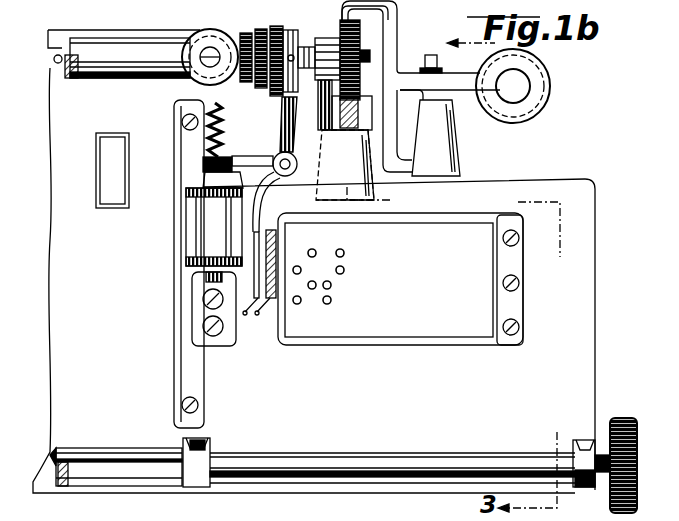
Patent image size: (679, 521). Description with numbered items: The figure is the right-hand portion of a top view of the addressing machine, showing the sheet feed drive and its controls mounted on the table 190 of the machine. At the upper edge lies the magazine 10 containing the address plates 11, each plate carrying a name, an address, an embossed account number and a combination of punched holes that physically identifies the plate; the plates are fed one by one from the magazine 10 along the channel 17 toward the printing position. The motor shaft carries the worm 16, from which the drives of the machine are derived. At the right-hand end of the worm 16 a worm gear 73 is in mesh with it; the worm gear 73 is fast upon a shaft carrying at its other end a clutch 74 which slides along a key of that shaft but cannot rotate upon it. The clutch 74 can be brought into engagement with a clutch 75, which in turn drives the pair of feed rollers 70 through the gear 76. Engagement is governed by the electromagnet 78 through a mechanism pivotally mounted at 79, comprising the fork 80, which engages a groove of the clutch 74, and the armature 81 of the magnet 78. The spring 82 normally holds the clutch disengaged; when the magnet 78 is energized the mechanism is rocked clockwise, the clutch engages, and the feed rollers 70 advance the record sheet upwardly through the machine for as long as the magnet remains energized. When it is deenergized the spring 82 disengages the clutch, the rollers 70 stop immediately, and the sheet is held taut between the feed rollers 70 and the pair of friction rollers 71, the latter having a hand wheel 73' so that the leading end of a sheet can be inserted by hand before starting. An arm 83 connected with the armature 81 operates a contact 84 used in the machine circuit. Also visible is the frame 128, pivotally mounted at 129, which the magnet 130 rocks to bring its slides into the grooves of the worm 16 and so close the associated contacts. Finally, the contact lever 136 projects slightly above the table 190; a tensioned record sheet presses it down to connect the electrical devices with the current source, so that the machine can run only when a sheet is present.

The table 190 is at (52, 358).
The feed rollers 70 is at (75, 76).
The channel 17 is at (244, 40).
The gear 76 is at (246, 83).
The clutch 75 is at (261, 89).
The clutch 74 is at (283, 28).
The worm gear 73 is at (342, 72).
The worm 16 is at (361, 42).
The frame 128 is at (397, 22).
The pivot 129 is at (432, 55).
The magnet 130 is at (553, 76).
The spring 82 is at (205, 130).
The armature 81 is at (224, 158).
The fork 80 is at (280, 125).
The pivot 79 is at (276, 159).
The arm 83 is at (250, 203).
The contact 84 is at (270, 231).
The electromagnet 78 is at (214, 259).
The contact lever 136 is at (108, 200).
The address plate 11 is at (398, 230).
The magazine 10 is at (494, 263).
The friction rollers 71 is at (68, 458).
The hand wheel 73' is at (627, 454).